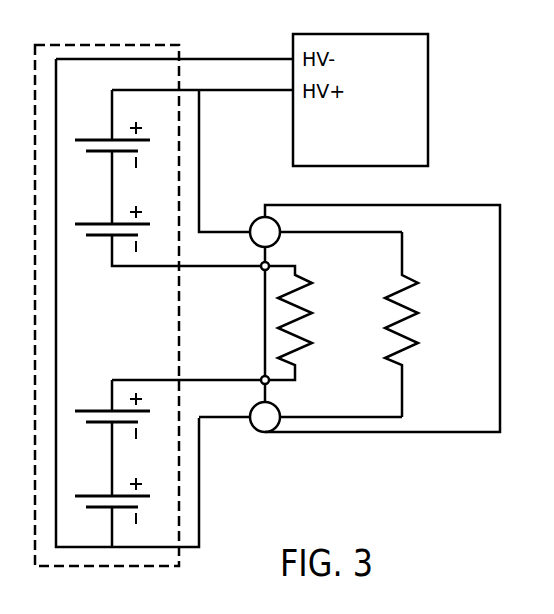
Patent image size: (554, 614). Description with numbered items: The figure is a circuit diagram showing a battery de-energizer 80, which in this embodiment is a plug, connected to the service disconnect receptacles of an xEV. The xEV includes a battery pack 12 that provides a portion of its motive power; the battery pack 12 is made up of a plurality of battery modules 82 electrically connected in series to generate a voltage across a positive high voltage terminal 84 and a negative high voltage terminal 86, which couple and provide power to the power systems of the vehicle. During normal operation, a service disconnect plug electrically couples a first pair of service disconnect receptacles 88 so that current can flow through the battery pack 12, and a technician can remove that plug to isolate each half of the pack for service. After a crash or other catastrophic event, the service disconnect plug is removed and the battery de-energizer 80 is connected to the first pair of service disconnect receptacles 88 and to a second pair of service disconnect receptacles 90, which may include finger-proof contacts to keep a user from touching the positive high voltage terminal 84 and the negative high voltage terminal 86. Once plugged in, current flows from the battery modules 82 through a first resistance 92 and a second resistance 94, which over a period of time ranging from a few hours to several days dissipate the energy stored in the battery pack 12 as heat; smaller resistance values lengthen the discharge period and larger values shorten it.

The battery pack 12 is at (32, 337).
The battery modules 82 is at (108, 138).
The positive high voltage terminal 84 is at (292, 88).
The negative high voltage terminal 86 is at (292, 57).
The battery de-energizer 80 is at (438, 204).
The first pair of service disconnect receptacles 88 is at (260, 269).
The second pair of service disconnect receptacles 90 is at (254, 222).
The first resistance 92 is at (305, 280).
The second resistance 94 is at (412, 280).